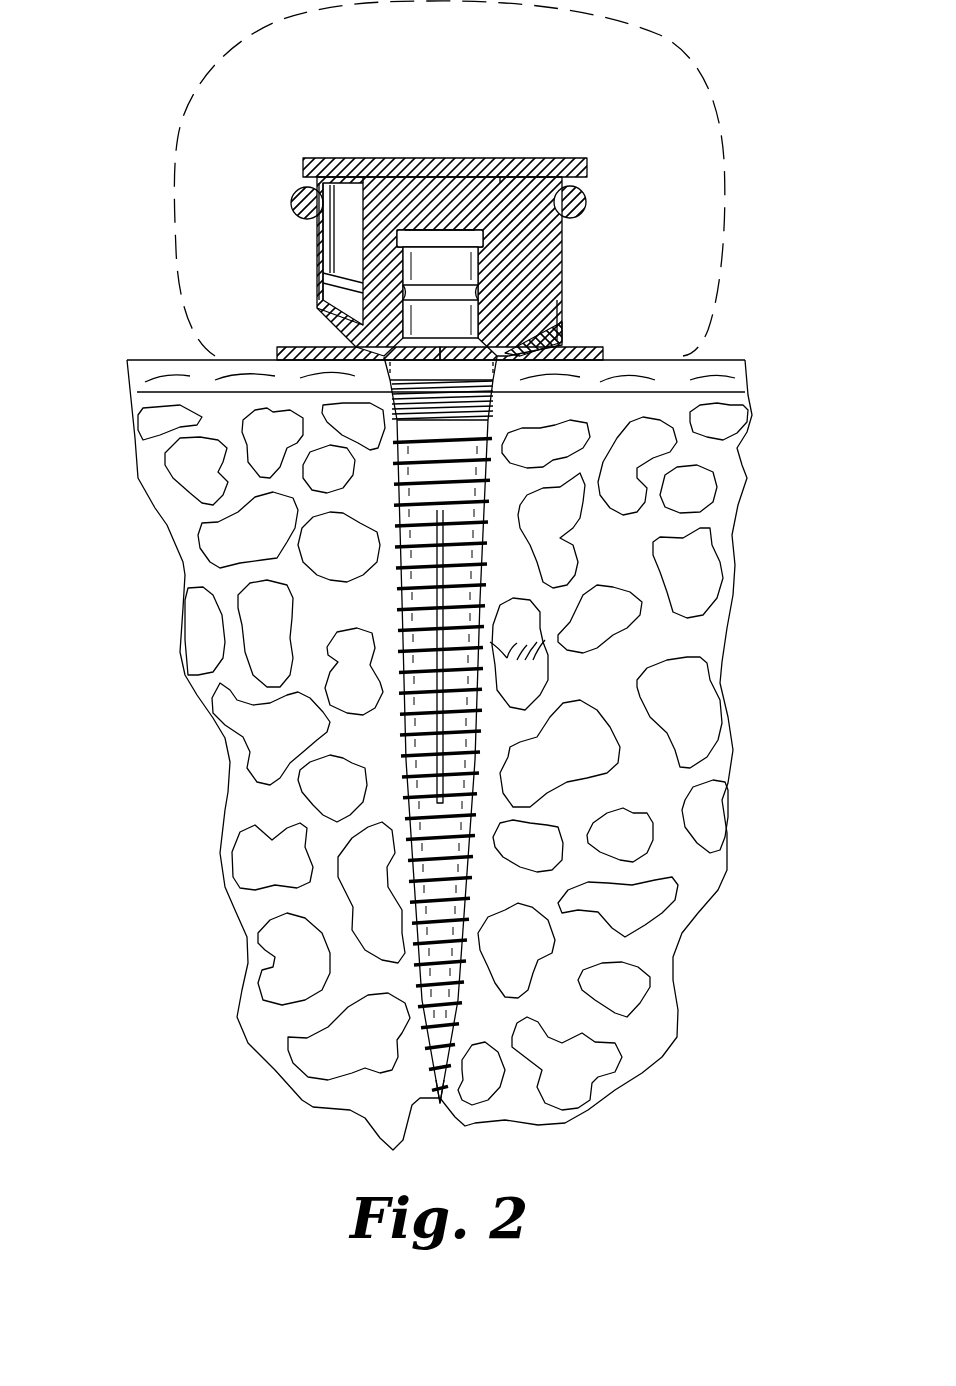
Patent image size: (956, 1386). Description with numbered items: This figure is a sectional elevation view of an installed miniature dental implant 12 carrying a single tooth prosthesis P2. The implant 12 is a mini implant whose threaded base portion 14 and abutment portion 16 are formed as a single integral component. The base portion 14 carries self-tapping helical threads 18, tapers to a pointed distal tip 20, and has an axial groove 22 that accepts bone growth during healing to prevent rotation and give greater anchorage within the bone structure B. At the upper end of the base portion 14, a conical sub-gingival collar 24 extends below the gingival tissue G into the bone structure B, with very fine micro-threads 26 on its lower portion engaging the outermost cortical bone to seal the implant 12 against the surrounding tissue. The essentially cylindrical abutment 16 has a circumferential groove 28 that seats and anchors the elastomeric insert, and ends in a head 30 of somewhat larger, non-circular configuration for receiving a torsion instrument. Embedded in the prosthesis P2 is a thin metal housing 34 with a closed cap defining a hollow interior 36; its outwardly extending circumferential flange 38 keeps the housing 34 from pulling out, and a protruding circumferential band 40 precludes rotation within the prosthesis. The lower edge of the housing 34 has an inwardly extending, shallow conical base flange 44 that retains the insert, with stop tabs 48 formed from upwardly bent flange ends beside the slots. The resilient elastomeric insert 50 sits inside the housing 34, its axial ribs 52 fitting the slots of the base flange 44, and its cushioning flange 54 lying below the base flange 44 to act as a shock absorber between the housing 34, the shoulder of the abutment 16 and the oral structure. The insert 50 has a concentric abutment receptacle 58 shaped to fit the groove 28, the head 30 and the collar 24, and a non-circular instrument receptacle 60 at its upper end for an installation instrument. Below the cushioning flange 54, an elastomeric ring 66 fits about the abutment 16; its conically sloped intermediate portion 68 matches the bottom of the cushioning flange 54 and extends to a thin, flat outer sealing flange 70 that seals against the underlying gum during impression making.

The miniature dental implant 12 is at (389, 760).
The threaded base portion 14 is at (441, 760).
The abutment portion 16 is at (517, 202).
The helical threads 18 is at (483, 660).
The pointed distal tip 20 is at (393, 1143).
The axial grooves 22 is at (398, 596).
The sub-gingival collar 24 is at (385, 368).
The micro-threads 26 is at (493, 386).
The circumferential groove 28 is at (481, 288).
The head 30 is at (439, 214).
The housing 34 is at (320, 265).
The hollow interior 36 is at (347, 222).
The circumferential flange 38 is at (293, 164).
The circumferential bead or band 40 is at (297, 185).
The base flange 44 is at (562, 312).
The stop tab 48 is at (338, 288).
The resilient elastomeric insert 50 is at (455, 190).
The axial ribs 52 is at (585, 204).
The cushioning flange 54 is at (320, 325).
The abutment receptacle 58 is at (367, 258).
The instrument receptacle 60 is at (415, 229).
The elastomeric ring 66 is at (287, 347).
The conically sloped intermediate portion 68 is at (562, 345).
The outer sealing flange 70 is at (600, 355).
The single tooth prosthesis P2 is at (178, 147).
The gingival tissue G is at (130, 378).
The bone structure B is at (158, 512).